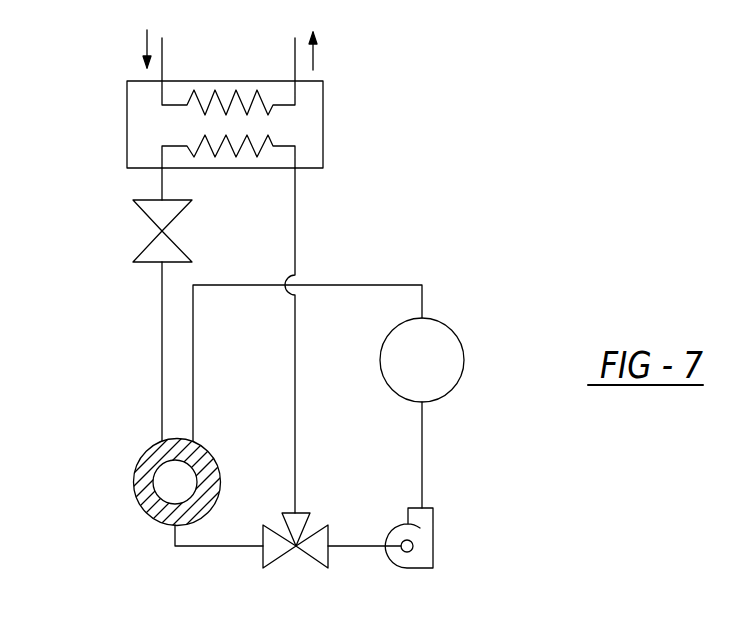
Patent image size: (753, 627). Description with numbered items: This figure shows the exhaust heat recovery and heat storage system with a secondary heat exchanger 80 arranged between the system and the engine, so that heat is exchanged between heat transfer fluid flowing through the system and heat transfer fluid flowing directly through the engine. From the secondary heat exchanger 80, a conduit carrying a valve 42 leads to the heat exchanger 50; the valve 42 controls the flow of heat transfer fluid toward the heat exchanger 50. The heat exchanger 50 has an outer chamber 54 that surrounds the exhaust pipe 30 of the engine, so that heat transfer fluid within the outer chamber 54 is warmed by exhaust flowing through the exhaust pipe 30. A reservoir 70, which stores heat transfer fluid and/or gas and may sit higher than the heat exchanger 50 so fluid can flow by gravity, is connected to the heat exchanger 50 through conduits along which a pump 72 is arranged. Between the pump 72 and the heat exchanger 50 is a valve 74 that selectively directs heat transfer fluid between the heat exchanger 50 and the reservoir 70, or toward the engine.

The secondary heat exchanger 80 is at (124, 125).
The valve 42 is at (143, 251).
The outer chamber 54 is at (155, 455).
The heat exchanger 50 is at (160, 477).
The exhaust pipe 30 is at (164, 496).
The reservoir 70 is at (390, 390).
The valve 74 is at (263, 556).
The pump 72 is at (434, 522).